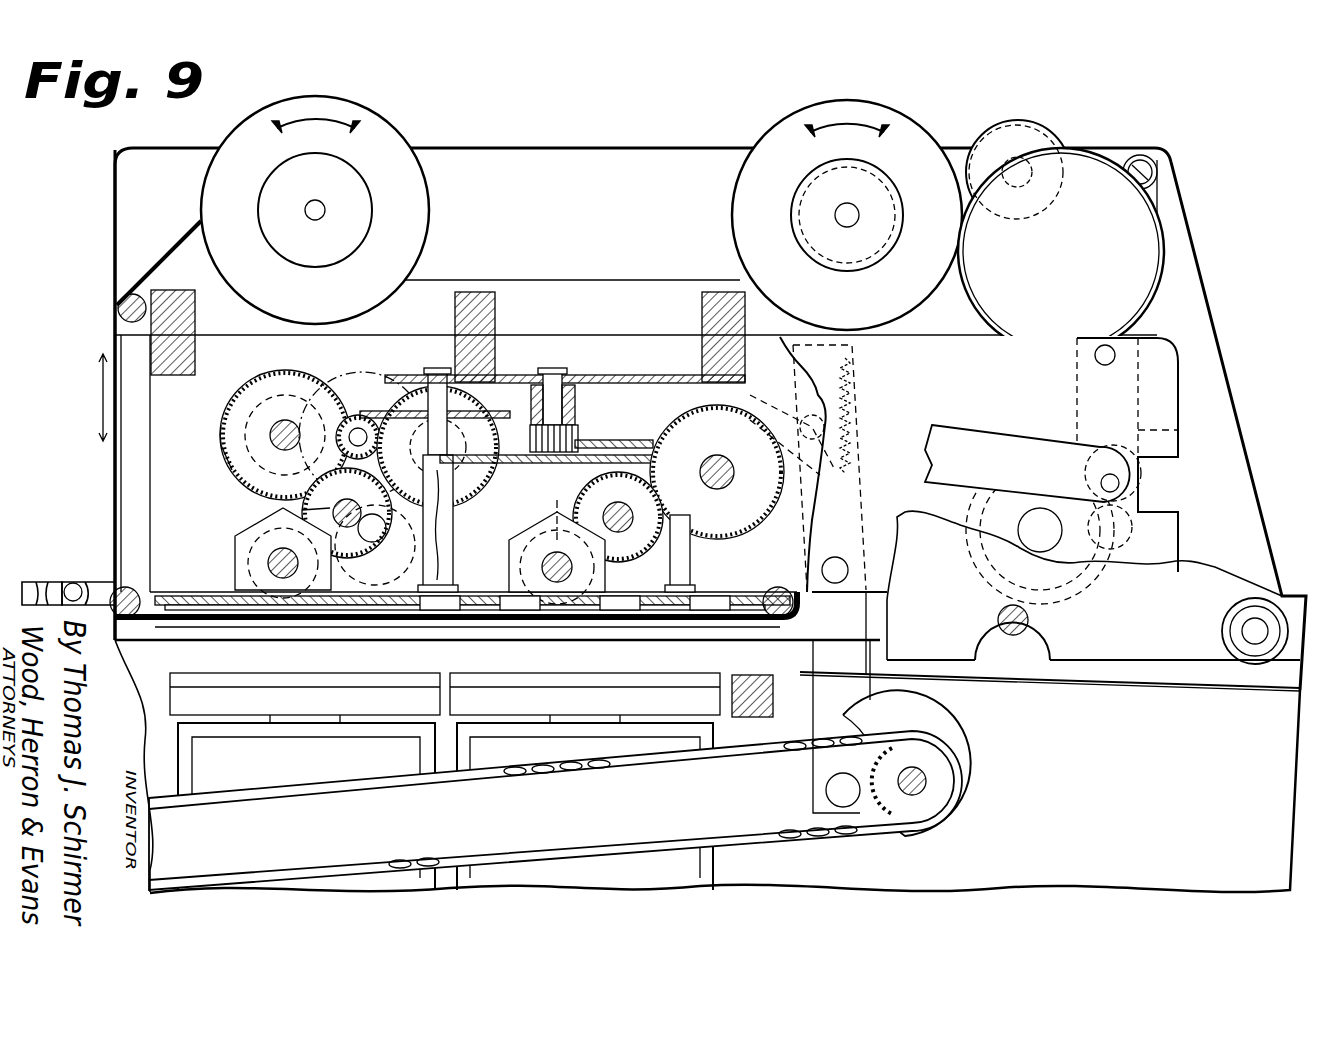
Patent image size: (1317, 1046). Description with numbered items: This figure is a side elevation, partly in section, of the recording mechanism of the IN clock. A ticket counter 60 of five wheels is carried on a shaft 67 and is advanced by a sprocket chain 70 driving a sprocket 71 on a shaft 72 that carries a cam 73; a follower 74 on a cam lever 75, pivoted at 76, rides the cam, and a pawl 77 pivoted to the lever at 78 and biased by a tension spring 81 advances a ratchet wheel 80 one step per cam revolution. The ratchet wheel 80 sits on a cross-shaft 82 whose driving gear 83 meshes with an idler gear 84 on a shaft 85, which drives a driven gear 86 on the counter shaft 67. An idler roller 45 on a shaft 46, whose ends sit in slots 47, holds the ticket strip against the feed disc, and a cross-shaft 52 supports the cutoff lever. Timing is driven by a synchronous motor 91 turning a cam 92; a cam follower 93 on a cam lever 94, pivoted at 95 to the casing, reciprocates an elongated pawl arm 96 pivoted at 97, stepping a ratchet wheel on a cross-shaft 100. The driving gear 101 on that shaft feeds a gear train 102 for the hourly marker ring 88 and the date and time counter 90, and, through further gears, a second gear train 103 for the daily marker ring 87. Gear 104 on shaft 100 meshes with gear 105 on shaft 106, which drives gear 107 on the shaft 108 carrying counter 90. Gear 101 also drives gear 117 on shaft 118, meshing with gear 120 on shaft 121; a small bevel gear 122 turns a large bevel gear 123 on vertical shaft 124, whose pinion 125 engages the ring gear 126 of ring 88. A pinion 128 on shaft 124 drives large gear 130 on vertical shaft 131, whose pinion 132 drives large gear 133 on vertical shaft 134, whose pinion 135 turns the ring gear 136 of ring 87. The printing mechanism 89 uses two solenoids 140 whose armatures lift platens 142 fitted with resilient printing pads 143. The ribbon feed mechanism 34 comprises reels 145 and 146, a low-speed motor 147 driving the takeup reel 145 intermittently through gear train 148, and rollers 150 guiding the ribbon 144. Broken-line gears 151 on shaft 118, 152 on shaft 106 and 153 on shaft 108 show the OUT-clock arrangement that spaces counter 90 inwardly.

The ribbon feed mechanism 34 is at (1175, 222).
The idler roller 45 is at (68, 560).
The shaft 46 is at (76, 583).
The slots 47 is at (40, 580).
The cross-shaft 52 is at (1015, 636).
The ticket counter 60 is at (508, 582).
The shaft 67 is at (541, 565).
The sprocket chain 70 is at (572, 855).
The sprocket 71 is at (918, 805).
The shaft 72 is at (926, 785).
The cam 73 is at (965, 738).
The follower 74 is at (826, 797).
The cam lever 75 is at (860, 648).
The pivot 76 is at (838, 558).
The pawl 77 is at (790, 392).
The pivotal connection 78 is at (808, 467).
The ratchet wheel 80 is at (715, 445).
The tension spring 81 is at (855, 398).
The cross-shaft 82 is at (734, 478).
The driving gear 83 is at (736, 520).
The idler gear 84 is at (640, 508).
The shaft 85 is at (636, 505).
The driven gear 86 is at (560, 510).
The daily rate marker ring 87 is at (615, 628).
The hourly marker ring 88 is at (370, 635).
The printing mechanism 89 is at (158, 694).
The date and time counter 90 is at (203, 569).
The synchronous motor 91 is at (1090, 582).
The cam 92 is at (1040, 440).
The cam follower 93 is at (1130, 527).
The cam lever 94 is at (1180, 430).
The pivotal connection 95 is at (1108, 365).
The pawl arm 96 is at (958, 432).
The pivotal connection 97 is at (1120, 480).
The cross-shaft 100 is at (284, 425).
The driving gear 101 is at (258, 385).
The gear train 102 is at (199, 494).
The second gear train 103 is at (626, 402).
The gear 104 is at (222, 448).
The gear 105 is at (302, 510).
The shaft 106 is at (347, 513).
The gear 107 is at (240, 548).
The shaft 108 is at (292, 555).
The gear 117 is at (355, 412).
The shaft 118 is at (299, 435).
The gear 120 is at (478, 400).
The shaft 121 is at (470, 430).
The small bevel gear 122 is at (472, 482).
The large bevel gear 123 is at (410, 410).
The vertical shaft 124 is at (436, 370).
The pinion 125 is at (447, 625).
The ring gear 126 is at (318, 635).
The pinion 128 is at (438, 523).
The large gear 130 is at (500, 470).
The vertical shaft 131 is at (550, 370).
The pinion 132 is at (580, 430).
The large gear 133 is at (636, 442).
The vertical shaft 134 is at (690, 555).
The pinion 135 is at (700, 630).
The ring gear 136 is at (520, 628).
The solenoid 140 is at (445, 806).
The platen 142 is at (457, 706).
The printing pad 143 is at (252, 680).
The ribbon 144 is at (178, 632).
The takeup reel 145 is at (840, 102).
The reel 146 is at (372, 100).
The motor 147 is at (1061, 239).
The gear train 148 is at (960, 132).
The rollers 150 is at (124, 322).
The gear 151 is at (356, 378).
The gear 152 is at (372, 570).
The gear 153 is at (358, 535).